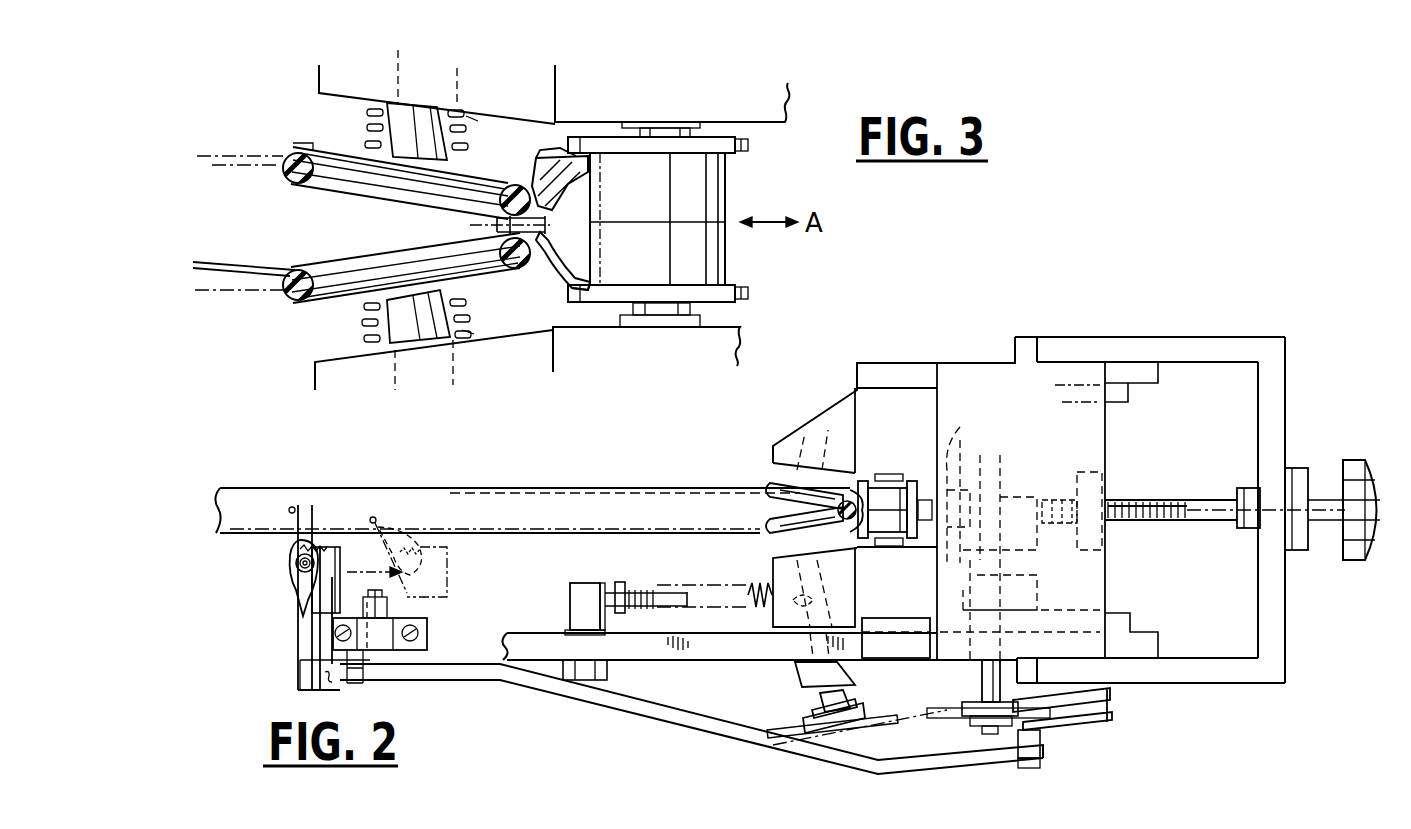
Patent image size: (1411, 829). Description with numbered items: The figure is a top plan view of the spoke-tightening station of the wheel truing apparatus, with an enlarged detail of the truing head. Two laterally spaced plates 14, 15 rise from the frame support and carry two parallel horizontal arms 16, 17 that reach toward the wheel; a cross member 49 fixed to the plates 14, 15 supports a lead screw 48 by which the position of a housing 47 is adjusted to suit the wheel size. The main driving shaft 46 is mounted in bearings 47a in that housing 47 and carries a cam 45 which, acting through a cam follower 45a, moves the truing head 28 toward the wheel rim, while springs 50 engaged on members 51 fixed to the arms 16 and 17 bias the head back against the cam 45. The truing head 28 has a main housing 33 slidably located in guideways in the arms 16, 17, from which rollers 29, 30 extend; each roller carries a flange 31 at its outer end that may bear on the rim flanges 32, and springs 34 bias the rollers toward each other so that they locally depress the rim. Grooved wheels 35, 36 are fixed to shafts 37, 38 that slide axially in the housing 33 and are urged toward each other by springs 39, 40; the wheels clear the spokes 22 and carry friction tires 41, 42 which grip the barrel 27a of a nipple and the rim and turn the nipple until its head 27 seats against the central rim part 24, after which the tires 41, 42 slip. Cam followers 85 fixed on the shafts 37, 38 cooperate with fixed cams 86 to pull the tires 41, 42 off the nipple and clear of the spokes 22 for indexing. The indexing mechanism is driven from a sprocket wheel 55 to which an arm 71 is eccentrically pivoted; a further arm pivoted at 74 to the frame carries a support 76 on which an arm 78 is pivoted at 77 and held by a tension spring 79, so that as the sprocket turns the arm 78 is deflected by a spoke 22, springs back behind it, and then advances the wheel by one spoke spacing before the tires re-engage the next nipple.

In FIG. 2, the plate 14 is at (1163, 673).
In FIG. 2, the plate 15 is at (1183, 350).
In FIG. 2, the horizontal arm 16 is at (703, 647).
In FIG. 2, the horizontal arm 17 is at (920, 375).
In FIG. 3, the spoke 22 is at (230, 260).
In FIG. 3, the central part of wheel rim 24 is at (547, 195).
In FIG. 2, the central part of wheel rim 24 is at (490, 493).
In FIG. 3, the nipple head 27 is at (548, 236).
In FIG. 2, the nipple head 27 is at (288, 510).
In FIG. 3, the nipple barrel 27a is at (500, 227).
In FIG. 2, the truing head 28 is at (760, 473).
In FIG. 3, the roller 29 is at (715, 255).
In FIG. 3, the roller 30 is at (710, 186).
In FIG. 2, the roller 30 is at (887, 510).
In FIG. 3, the roller flange 31 is at (752, 144).
In FIG. 2, the roller flange 31 is at (895, 509).
In FIG. 3, the rim flange 32 is at (576, 156).
In FIG. 3, the main housing 33 is at (665, 110).
In FIG. 2, the main housing 33 is at (908, 442).
In FIG. 3, the spring 34 is at (705, 121).
In FIG. 2, the spring 34 is at (889, 510).
In FIG. 3, the grooved wheel 35 is at (322, 305).
In FIG. 3, the grooved wheel 36 is at (320, 150).
In FIG. 3, the shaft 37 is at (402, 330).
In FIG. 3, the shaft 38 is at (428, 108).
In FIG. 3, the spring 39 is at (465, 328).
In FIG. 3, the spring 40 is at (470, 128).
In FIG. 3, the friction tire 41 is at (296, 268).
In FIG. 3, the friction tire 42 is at (290, 183).
In FIG. 2, the cam 45 is at (1007, 497).
In FIG. 2, the cam follower 45a is at (952, 455).
In FIG. 2, the main driving shaft 46 is at (985, 667).
In FIG. 2, the housing 47 is at (1095, 563).
In FIG. 2, the bearing 47a is at (947, 582).
In FIG. 2, the lead screw 48 is at (1203, 508).
In FIG. 2, the cross member 49 is at (1272, 427).
In FIG. 2, the spring 50 is at (643, 585).
In FIG. 2, the member 51 is at (582, 595).
In FIG. 2, the sprocket wheel 55 is at (1097, 720).
In FIG. 2, the arm 71 is at (655, 708).
In FIG. 2, the pivot 74 is at (380, 623).
In FIG. 2, the support 76 is at (300, 603).
In FIG. 2, the pivot 77 is at (297, 567).
In FIG. 2, the arm 78 is at (300, 522).
In FIG. 2, the tension spring 79 is at (322, 552).
In FIG. 2, the cam follower 85 is at (852, 687).
In FIG. 2, the fixed cam 86 is at (800, 680).